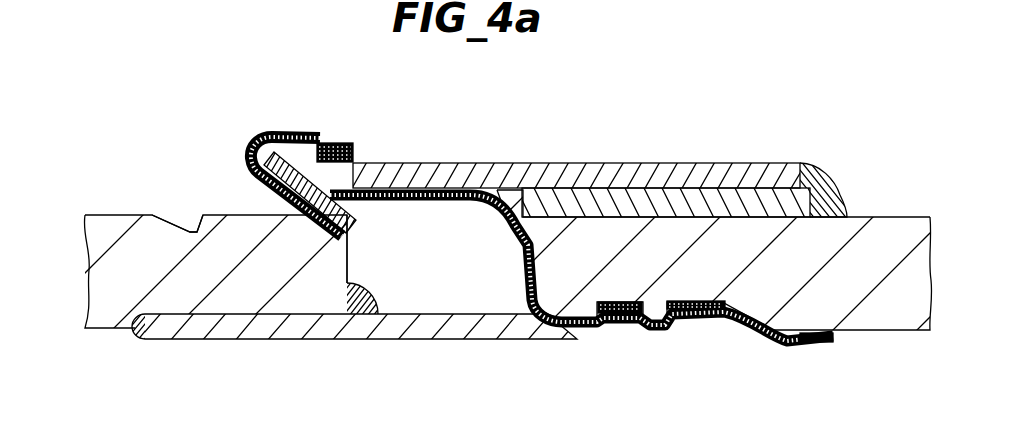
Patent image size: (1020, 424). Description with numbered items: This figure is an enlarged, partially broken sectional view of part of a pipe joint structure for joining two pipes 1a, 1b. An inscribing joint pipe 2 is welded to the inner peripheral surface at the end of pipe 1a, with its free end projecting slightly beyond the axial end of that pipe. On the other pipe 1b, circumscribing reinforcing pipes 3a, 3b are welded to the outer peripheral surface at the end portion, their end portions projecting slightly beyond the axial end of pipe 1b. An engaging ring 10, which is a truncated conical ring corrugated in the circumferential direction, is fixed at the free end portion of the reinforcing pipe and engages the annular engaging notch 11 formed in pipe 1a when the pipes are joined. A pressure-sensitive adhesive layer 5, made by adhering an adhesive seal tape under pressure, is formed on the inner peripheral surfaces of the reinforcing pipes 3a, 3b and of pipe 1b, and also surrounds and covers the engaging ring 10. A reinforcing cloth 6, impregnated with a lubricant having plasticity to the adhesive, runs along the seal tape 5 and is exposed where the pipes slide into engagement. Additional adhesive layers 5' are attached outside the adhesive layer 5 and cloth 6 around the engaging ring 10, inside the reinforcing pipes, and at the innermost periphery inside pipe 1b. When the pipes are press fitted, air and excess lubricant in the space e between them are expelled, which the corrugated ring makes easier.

The pipe 1a is at (113, 215).
The pipe 1b is at (885, 217).
The inscribing joint pipe 2 is at (443, 330).
The circumscribing reinforcing pipe 3a is at (631, 163).
The circumscribing reinforcing pipe 3b is at (686, 190).
The pressure-sensitive adhesive layer 5 is at (542, 212).
The additional adhesive layer 5' is at (580, 236).
The reinforcing cloth 6 is at (248, 158).
The engaging ring 10 is at (358, 226).
The annular engaging notch 11 is at (183, 232).
The space e is at (438, 278).